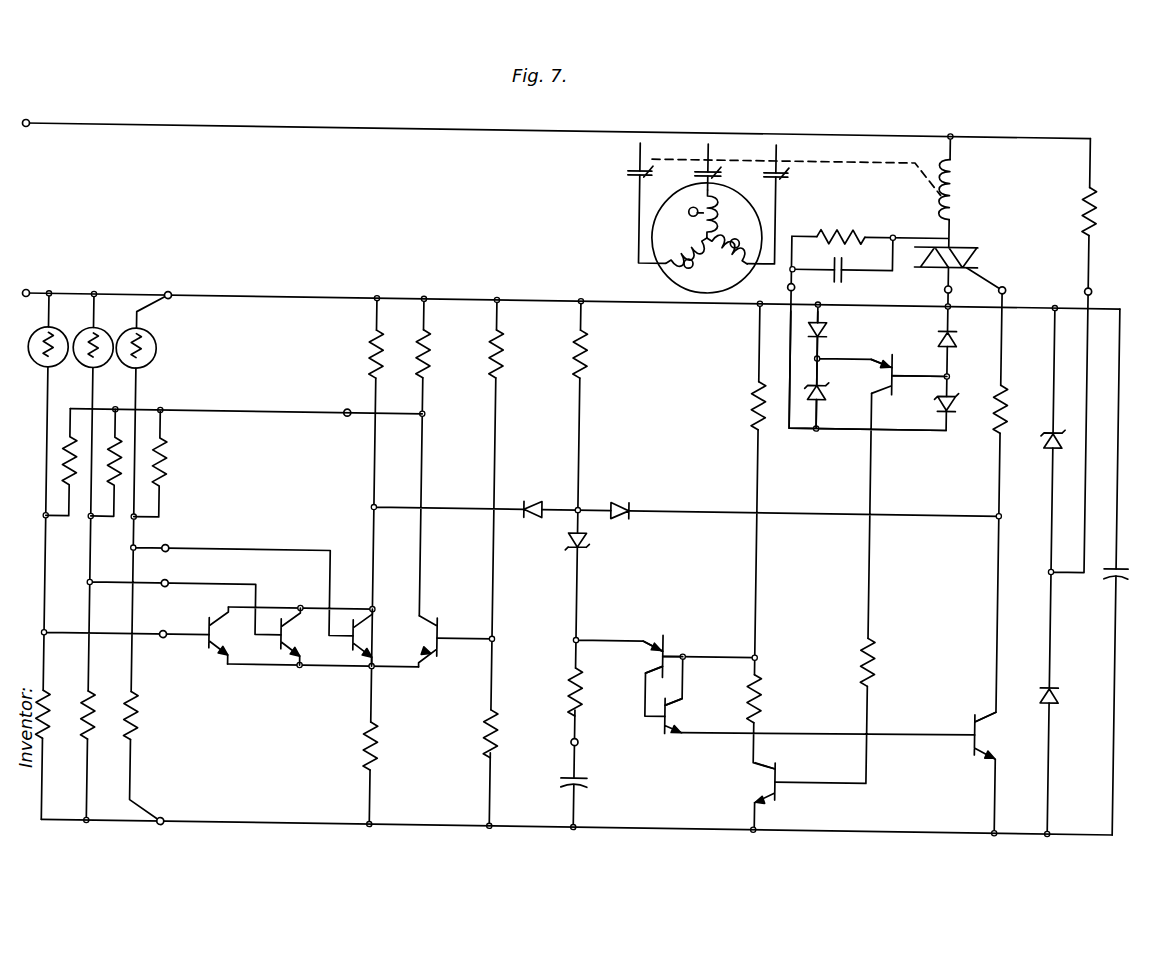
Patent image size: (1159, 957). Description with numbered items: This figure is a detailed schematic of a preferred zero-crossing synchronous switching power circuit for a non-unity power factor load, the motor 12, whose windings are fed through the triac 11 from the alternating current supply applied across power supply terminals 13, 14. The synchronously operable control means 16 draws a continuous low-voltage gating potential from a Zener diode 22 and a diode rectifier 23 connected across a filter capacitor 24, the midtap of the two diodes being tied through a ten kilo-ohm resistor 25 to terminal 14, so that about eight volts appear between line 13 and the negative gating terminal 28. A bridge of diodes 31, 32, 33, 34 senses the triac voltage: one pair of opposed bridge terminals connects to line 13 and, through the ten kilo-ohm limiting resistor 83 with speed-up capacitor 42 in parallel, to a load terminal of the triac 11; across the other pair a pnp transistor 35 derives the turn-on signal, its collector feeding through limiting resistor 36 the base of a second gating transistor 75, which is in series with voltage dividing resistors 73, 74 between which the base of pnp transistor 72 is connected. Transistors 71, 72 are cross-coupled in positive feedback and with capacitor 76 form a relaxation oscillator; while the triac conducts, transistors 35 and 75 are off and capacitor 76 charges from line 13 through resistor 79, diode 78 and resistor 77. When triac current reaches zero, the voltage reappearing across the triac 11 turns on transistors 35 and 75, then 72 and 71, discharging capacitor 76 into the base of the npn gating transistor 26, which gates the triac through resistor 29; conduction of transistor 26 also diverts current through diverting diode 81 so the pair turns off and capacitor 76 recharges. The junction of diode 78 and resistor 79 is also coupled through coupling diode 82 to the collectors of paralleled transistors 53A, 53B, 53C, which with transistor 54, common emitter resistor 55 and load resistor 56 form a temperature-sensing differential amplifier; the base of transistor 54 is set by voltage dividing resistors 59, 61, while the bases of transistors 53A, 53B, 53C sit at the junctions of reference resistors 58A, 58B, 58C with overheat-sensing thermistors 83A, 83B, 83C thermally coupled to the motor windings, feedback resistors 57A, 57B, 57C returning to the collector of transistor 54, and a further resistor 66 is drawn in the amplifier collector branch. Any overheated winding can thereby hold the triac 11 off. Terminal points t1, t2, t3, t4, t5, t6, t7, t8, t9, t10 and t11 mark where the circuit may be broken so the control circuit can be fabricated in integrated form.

The power supply terminal 14 is at (318, 126).
The power supply line 13 is at (305, 293).
The low voltage gating potential terminal 28 is at (245, 819).
The temperature-sensitive thermistor 83A is at (38, 370).
The overheat sensor 83B is at (98, 356).
The overheat sensor 83C is at (156, 354).
The feedback resistor 57A is at (65, 454).
The resistor 57B is at (117, 497).
The resistor 57C is at (170, 451).
The reference resistor 58A is at (52, 724).
The resistor 58B is at (97, 724).
The resistor 58C is at (140, 724).
The transistor 53A is at (205, 648).
The transistor 53B is at (280, 656).
The transistor 53C is at (352, 656).
The transistor 54 is at (445, 622).
The resistor 66 is at (370, 347).
The load resistor 56 is at (431, 349).
The voltage dividing resistor 59 is at (504, 351).
The second resistor 79 is at (588, 349).
The common emitter resistor 55 is at (366, 745).
The voltage dividing resistor 61 is at (489, 729).
The resistor 77 is at (572, 687).
The voltage dividing resistor 73 is at (754, 400).
The voltage dividing resistor 74 is at (766, 686).
The limiting resistor 36 is at (879, 661).
The resistor 29 is at (995, 426).
The resistor 25 is at (1096, 198).
The limiting resistor 83 is at (848, 222).
The coupling diode 82 is at (543, 486).
The diverting diode 81 is at (625, 496).
The diode 78 is at (572, 535).
The diode 31 is at (829, 318).
The diode 32 is at (829, 378).
The diode 33 is at (934, 320).
The diode 34 is at (932, 398).
The Zener diode 22 is at (1060, 424).
The diode rectifier 23 is at (1057, 678).
The capacitor 76 is at (568, 771).
The capacitor 42 is at (840, 270).
The filter capacitor 24 is at (1103, 583).
The motor 12 is at (955, 176).
The triac 11 is at (978, 244).
The synchronously operable control circuit means 16 is at (833, 453).
The pnp junction transistor 35 is at (893, 351).
The transistor 72 is at (673, 637).
The transistor 71 is at (658, 735).
The second gating transistor 75 is at (785, 760).
The gating transistor 26 is at (976, 746).
The terminal point t1 is at (944, 276).
The terminal point t2 is at (787, 276).
The terminal point t3 is at (173, 284).
The terminal point t4 is at (349, 412).
The terminal point t5 is at (172, 543).
The terminal point t6 is at (172, 578).
The terminal point t7 is at (170, 629).
The terminal point t8 is at (171, 816).
The terminal point t9 is at (591, 729).
The terminal point t10 is at (1092, 276).
The terminal point t11 is at (1006, 276).